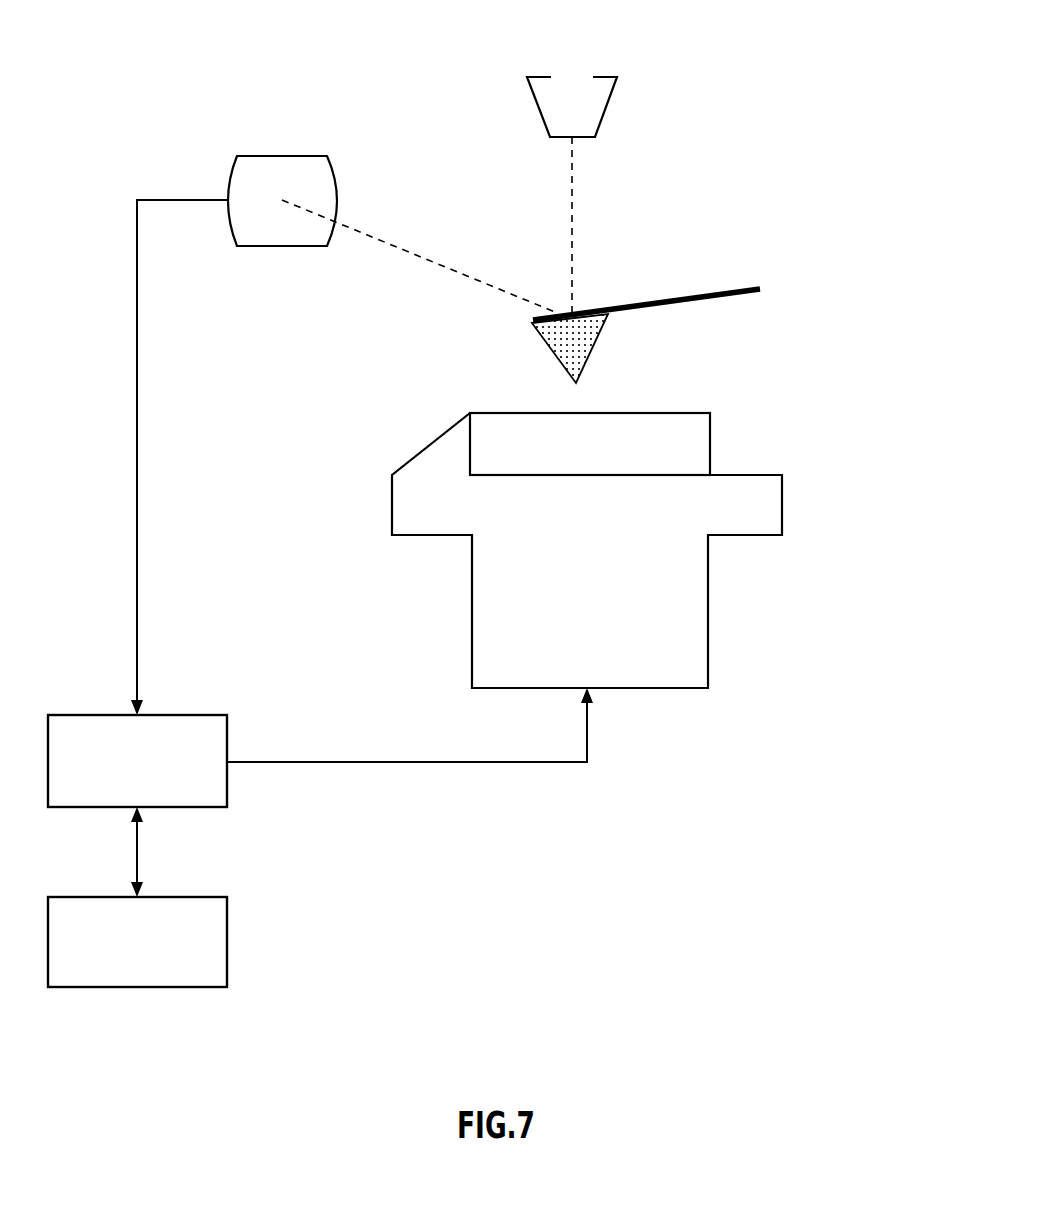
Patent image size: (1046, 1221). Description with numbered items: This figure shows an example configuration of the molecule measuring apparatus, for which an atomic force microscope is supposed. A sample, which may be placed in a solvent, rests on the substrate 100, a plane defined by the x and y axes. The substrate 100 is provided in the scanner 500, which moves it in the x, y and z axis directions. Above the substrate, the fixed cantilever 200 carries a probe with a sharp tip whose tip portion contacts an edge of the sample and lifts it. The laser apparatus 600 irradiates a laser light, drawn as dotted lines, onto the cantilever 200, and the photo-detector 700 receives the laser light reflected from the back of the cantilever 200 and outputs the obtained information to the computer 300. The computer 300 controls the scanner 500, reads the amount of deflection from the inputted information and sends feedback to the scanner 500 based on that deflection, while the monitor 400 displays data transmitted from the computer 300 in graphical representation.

The substrate 100 is at (665, 413).
The cantilever 200 is at (650, 297).
The computer 300 is at (182, 715).
The monitor 400 is at (183, 895).
The scanner 500 is at (708, 612).
The laser apparatus 600 is at (540, 77).
The photo-detector 700 is at (258, 154).